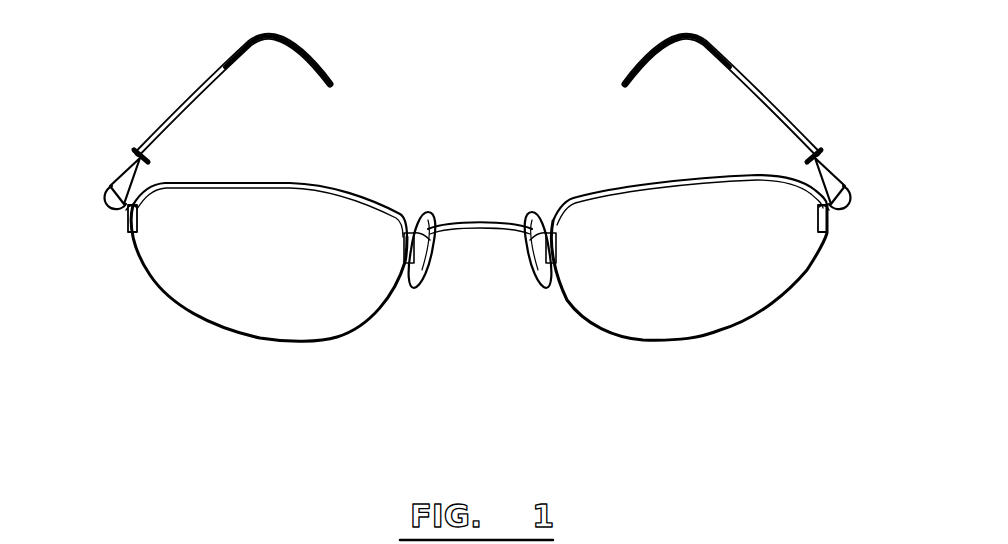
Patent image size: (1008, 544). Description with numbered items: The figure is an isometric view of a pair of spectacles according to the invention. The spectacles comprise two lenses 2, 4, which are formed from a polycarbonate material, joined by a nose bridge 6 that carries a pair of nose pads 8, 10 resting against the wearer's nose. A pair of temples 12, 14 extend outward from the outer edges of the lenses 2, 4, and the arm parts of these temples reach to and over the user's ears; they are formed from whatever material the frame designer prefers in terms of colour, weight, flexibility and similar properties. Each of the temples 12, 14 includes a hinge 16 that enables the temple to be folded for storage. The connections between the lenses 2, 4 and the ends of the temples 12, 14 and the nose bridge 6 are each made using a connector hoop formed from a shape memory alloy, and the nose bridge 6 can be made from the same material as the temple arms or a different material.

The lens 2 is at (253, 290).
The lens 4 is at (708, 290).
The nose bridge 6 is at (471, 220).
The nose pad 8 is at (423, 285).
The nose pad 10 is at (528, 287).
The temple 12 is at (180, 100).
The temple 14 is at (782, 102).
The hinge 16 is at (108, 182).